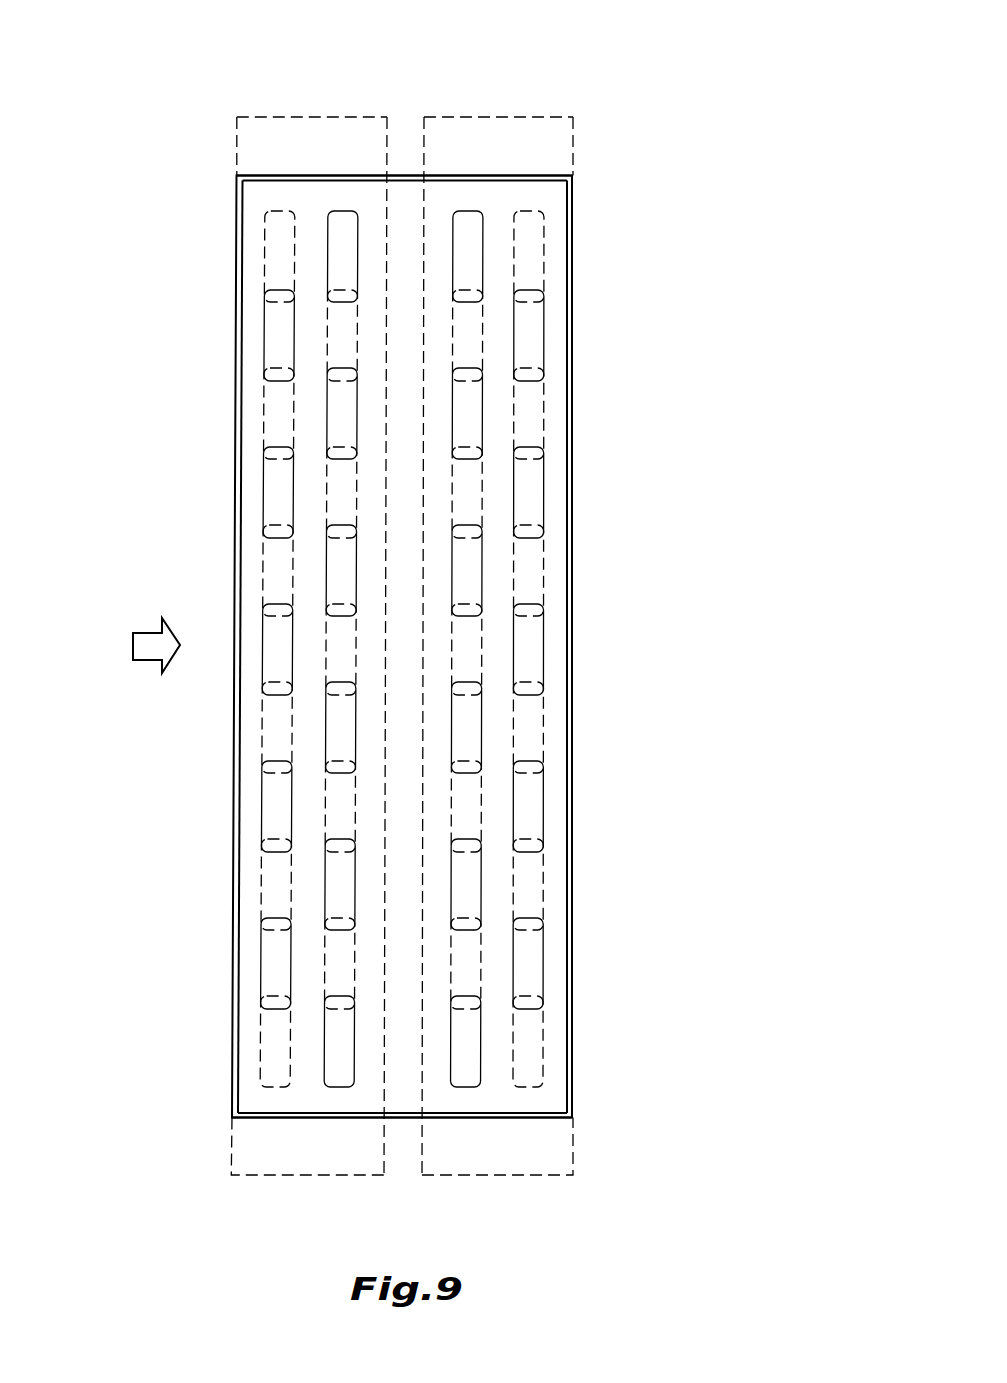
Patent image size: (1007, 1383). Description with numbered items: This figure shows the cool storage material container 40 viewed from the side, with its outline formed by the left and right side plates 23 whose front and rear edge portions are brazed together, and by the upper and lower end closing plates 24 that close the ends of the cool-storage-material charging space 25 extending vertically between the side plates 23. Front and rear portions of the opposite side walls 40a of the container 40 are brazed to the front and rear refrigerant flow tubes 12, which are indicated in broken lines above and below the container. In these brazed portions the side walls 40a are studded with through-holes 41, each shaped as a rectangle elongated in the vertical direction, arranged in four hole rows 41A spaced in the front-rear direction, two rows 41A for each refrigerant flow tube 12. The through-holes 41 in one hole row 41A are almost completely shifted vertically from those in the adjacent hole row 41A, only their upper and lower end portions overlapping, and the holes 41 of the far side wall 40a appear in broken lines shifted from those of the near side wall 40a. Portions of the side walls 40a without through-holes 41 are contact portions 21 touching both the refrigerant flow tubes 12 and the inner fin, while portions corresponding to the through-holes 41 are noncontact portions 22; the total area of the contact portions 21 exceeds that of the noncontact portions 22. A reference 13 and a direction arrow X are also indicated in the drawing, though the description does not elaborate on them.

The refrigerant flow tube 12 is at (440, 117).
The separator 13 is at (237, 123).
The contact portion 21 is at (543, 1095).
The noncontact portion 22 is at (533, 815).
The side plate 23 is at (247, 970).
The closing plate 24 is at (558, 175).
The cool-storage-material charging space 25 is at (574, 210).
The cool storage material container 40 is at (612, 502).
The side wall 40a is at (533, 410).
The through-hole 41 is at (330, 403).
The hole row 41A is at (280, 1003).
The direction X is at (145, 655).